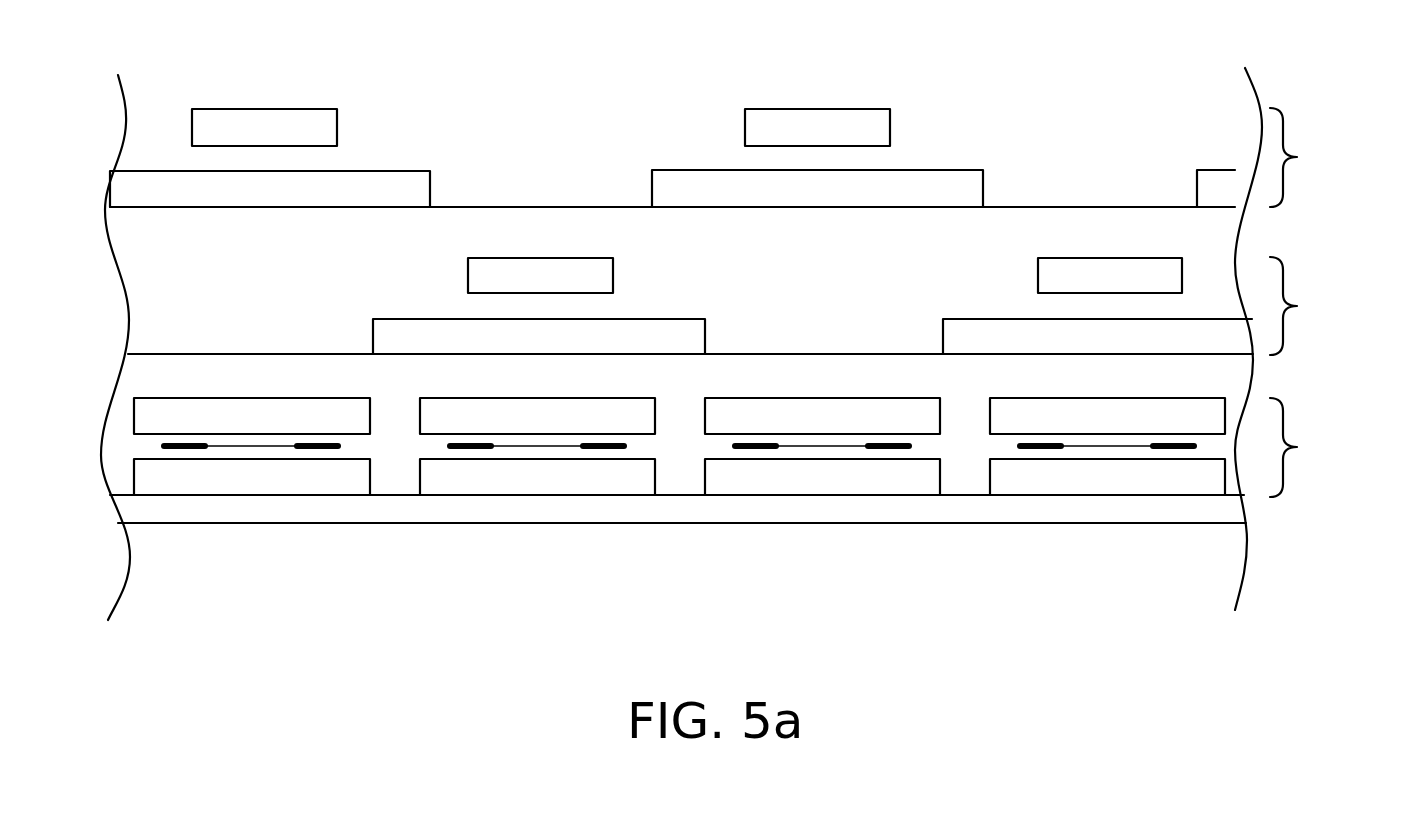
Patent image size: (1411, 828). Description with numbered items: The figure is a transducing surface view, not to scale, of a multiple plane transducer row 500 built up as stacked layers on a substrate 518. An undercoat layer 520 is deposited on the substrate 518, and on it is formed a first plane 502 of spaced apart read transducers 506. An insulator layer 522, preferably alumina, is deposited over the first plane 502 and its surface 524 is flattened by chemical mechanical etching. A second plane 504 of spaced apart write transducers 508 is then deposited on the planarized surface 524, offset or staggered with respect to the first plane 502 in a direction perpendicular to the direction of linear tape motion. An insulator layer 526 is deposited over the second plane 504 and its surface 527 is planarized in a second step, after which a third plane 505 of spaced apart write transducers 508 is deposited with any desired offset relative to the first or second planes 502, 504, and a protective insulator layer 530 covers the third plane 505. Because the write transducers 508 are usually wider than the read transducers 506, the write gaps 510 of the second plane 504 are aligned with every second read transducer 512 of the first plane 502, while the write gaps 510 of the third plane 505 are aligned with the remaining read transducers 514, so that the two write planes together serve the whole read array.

The multiple plane transducer row 500 is at (990, 634).
The first plane 502 is at (748, 447).
The second plane 504 is at (915, 306).
The third plane 505 is at (736, 158).
The read transducers 506 is at (448, 482).
The write transducers 508 is at (303, 109).
The write gaps 510 is at (338, 158).
The second read transducer 512 is at (555, 495).
The remaining read transducers 514 is at (217, 495).
The substrate 518 is at (1212, 562).
The undercoat layer 520 is at (747, 505).
The insulator layer 522 is at (1195, 380).
The surface 524 is at (808, 354).
The insulator layer 526 is at (1170, 230).
The surface 527 is at (1033, 207).
The protective insulator layer 530 is at (1207, 100).